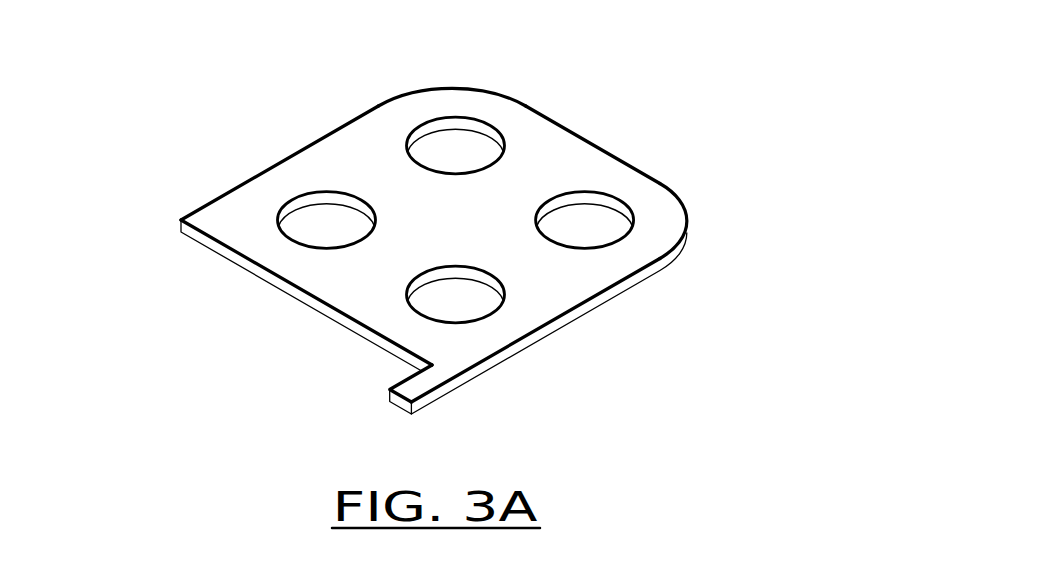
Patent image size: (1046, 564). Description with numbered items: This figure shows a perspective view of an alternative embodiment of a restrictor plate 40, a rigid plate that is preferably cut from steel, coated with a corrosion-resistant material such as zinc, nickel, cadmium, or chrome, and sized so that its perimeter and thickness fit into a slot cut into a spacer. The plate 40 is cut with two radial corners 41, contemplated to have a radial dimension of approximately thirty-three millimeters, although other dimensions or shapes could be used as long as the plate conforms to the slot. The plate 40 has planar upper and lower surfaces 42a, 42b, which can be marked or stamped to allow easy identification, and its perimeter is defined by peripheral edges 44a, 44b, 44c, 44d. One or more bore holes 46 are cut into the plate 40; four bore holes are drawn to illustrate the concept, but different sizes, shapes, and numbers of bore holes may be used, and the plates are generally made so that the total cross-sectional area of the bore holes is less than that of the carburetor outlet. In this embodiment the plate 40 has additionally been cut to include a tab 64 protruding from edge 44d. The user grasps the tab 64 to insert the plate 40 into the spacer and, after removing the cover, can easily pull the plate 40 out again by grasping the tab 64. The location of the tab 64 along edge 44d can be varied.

The restrictor plate 40 is at (438, 242).
The radial corners 41 is at (457, 88).
The planar upper surface 42a is at (340, 142).
The planar lower surface 42b is at (517, 353).
The peripheral edge 44a is at (263, 172).
The peripheral edge 44b is at (640, 167).
The peripheral edge 44c is at (585, 308).
The peripheral edge 44d is at (250, 268).
The bore holes 46 is at (553, 197).
The tab 64 is at (396, 384).